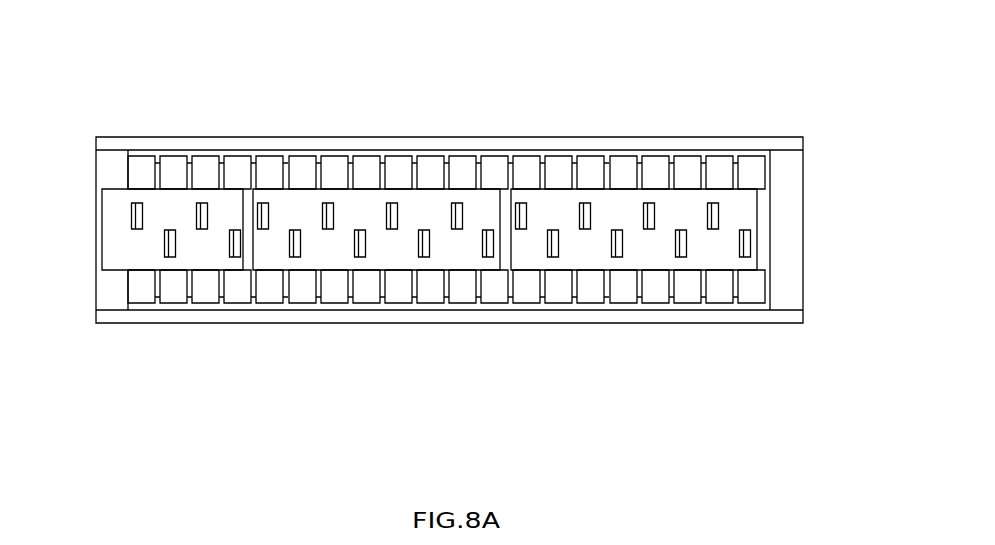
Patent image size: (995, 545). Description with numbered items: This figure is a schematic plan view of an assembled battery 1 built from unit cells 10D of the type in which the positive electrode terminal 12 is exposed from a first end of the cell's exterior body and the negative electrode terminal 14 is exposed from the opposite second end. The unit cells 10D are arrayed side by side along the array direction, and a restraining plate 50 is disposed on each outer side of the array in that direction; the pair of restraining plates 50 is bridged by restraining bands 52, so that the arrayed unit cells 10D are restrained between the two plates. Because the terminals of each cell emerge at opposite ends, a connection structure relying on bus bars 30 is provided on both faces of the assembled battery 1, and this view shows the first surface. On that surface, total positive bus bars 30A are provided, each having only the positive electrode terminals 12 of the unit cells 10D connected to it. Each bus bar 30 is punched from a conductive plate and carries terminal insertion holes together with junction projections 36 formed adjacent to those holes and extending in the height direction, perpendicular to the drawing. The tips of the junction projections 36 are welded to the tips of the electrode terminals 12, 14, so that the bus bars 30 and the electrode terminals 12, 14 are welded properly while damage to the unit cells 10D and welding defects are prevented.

The assembled battery 1 is at (52, 35).
The unit cell 10D is at (718, 161).
The positive electrode terminal 12 is at (141, 203).
The negative electrode terminal 14 is at (392, 203).
The bus bar 30 is at (383, 162).
The total positive bus bar 30A is at (126, 236).
The junction projection 36 is at (135, 203).
The restraining plate 50 is at (97, 173).
The restraining band 52 is at (559, 142).